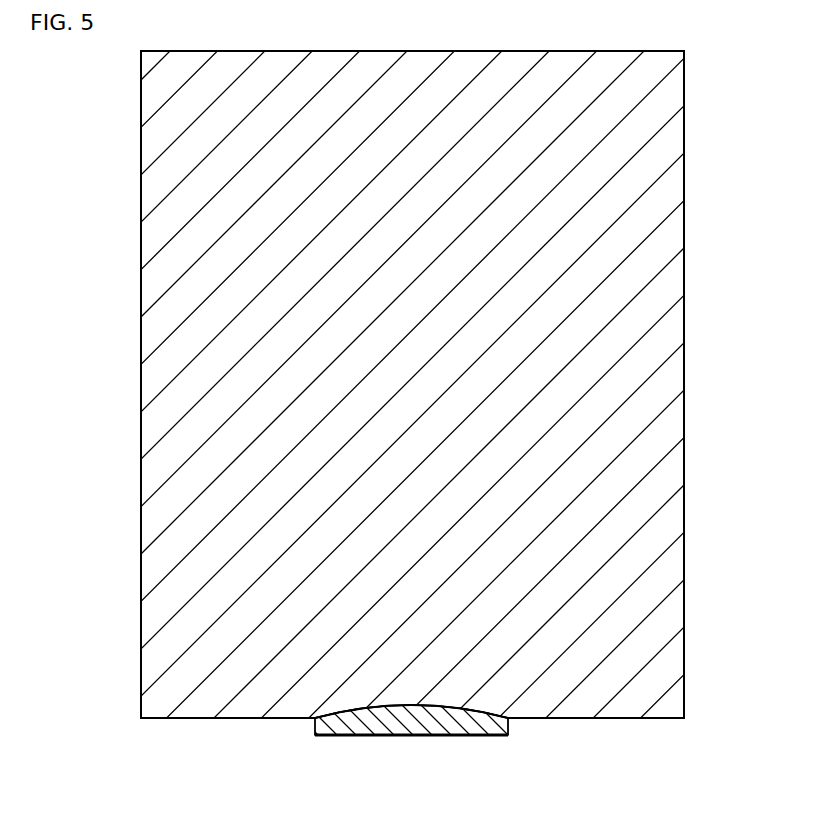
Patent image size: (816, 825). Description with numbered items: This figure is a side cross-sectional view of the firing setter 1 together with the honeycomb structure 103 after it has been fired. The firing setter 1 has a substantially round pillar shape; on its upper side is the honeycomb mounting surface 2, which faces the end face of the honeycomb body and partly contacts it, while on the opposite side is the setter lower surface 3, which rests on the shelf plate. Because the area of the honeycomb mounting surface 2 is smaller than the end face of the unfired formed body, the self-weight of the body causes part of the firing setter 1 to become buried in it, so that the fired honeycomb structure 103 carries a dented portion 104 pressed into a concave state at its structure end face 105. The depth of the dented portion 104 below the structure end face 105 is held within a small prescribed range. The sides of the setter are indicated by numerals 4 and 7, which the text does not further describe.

The firing setter 1 is at (316, 753).
The honeycomb mounting surface 2 is at (492, 716).
The setter lower surface 3 is at (383, 737).
The side surface 4 is at (313, 721).
The side surface 7 is at (510, 719).
The honeycomb structure 103 is at (717, 388).
The dented portion 104 is at (447, 709).
The structure end face 105 is at (665, 718).